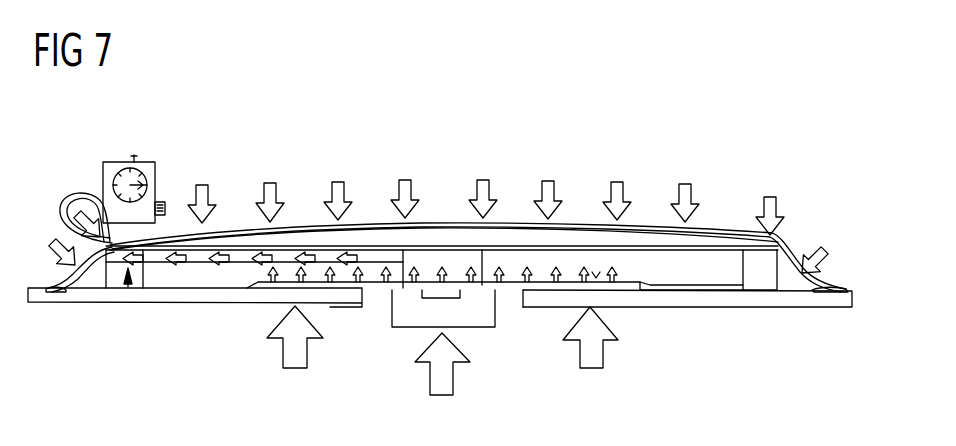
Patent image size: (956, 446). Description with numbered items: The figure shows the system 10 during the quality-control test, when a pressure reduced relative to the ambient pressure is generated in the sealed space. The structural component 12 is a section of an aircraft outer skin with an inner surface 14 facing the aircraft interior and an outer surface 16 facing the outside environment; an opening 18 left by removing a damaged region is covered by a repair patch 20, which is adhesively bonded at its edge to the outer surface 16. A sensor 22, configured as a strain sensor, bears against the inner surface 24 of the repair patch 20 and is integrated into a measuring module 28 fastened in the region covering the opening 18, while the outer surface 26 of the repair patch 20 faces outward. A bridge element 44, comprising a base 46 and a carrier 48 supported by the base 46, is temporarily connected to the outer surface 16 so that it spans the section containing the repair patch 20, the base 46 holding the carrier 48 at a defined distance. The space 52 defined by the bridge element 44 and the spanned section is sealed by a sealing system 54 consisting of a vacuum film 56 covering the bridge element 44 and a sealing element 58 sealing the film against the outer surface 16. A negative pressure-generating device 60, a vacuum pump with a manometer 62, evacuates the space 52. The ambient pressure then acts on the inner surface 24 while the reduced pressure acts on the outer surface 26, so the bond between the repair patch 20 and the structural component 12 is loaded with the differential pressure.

The system 10 is at (556, 146).
The structural component 12 is at (165, 300).
The inner surface 14 is at (616, 309).
The outer surface 16 is at (735, 283).
The opening 18 is at (519, 302).
The repair patch 20 is at (262, 289).
The sensor 22 is at (432, 299).
The inner surface 24 is at (382, 289).
The outer surface 26 is at (600, 270).
The measuring module 28 is at (481, 320).
The bridge element 44 is at (426, 176).
The base 46 is at (126, 291).
The carrier 48 is at (365, 232).
The space 52 is at (568, 258).
The sealing system 54 is at (736, 200).
The vacuum film 56 is at (232, 231).
The sealing element 58 is at (63, 293).
The negative pressure-generating device 60 is at (160, 172).
The manometer 62 is at (134, 160).